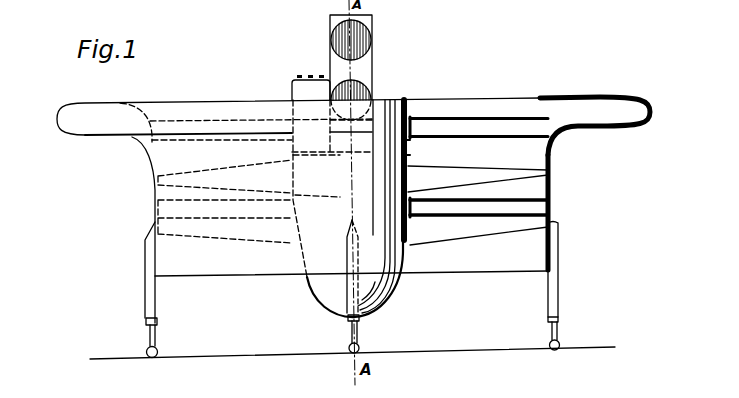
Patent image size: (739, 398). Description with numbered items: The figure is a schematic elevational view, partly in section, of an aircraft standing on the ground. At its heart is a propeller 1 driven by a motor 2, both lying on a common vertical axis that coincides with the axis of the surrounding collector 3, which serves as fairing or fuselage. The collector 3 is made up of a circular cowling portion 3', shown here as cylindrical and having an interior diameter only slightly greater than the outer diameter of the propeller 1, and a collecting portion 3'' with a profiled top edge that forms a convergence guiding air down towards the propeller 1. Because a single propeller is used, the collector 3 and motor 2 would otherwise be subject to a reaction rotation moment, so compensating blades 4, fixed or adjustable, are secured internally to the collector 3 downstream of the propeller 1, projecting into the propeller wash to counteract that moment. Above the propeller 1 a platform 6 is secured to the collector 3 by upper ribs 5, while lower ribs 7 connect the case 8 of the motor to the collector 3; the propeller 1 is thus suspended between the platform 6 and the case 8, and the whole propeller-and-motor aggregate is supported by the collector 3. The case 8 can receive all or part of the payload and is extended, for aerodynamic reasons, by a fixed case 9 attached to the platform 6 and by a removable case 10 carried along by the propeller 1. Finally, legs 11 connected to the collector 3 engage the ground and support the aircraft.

The propeller 1 is at (552, 168).
The motor 2 is at (372, 67).
The collector 3 is at (351, 289).
The cowling portion 3' is at (572, 212).
The collecting portion 3'' is at (595, 107).
The compensating blades 4 is at (527, 223).
The upper ribs 5 is at (455, 121).
The platform 6 is at (386, 100).
The lower ribs 7 is at (523, 203).
The case 8 is at (375, 290).
The fixed case 9 is at (408, 145).
The removable case 10 is at (408, 177).
The legs 11 is at (555, 300).